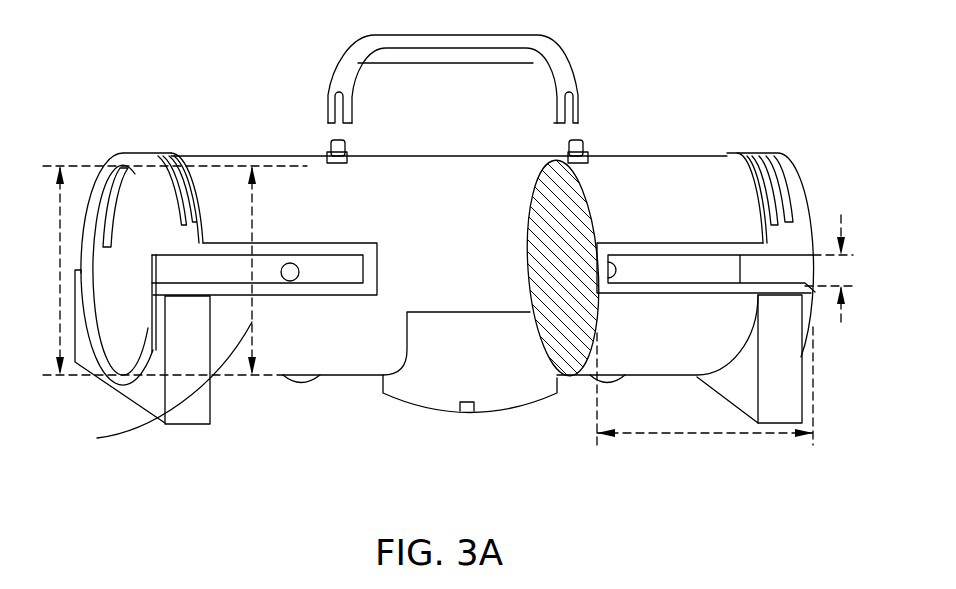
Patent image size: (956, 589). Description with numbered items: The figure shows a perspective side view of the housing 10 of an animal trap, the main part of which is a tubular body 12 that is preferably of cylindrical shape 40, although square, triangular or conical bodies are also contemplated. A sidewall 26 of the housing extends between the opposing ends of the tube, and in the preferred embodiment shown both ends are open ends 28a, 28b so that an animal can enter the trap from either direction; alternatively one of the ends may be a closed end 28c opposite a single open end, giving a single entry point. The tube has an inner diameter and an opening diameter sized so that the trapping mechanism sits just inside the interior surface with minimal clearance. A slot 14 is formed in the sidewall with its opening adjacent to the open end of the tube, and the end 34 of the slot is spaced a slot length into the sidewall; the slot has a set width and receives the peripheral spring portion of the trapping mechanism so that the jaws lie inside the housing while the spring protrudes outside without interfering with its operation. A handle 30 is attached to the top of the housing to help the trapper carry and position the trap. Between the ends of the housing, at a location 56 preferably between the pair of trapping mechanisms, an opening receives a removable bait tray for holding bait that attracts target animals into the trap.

The housing 10 is at (82, 77).
The tubular body 12 is at (778, 129).
The slot 14 is at (708, 263).
The sidewall 26 is at (357, 352).
The open end 28a is at (118, 218).
The open end 28b is at (820, 213).
The closed end 28c is at (580, 183).
The handle 30 is at (557, 68).
The end of the slot 34 is at (612, 262).
The cylindrical shape 40 is at (205, 128).
The location 56 is at (394, 432).